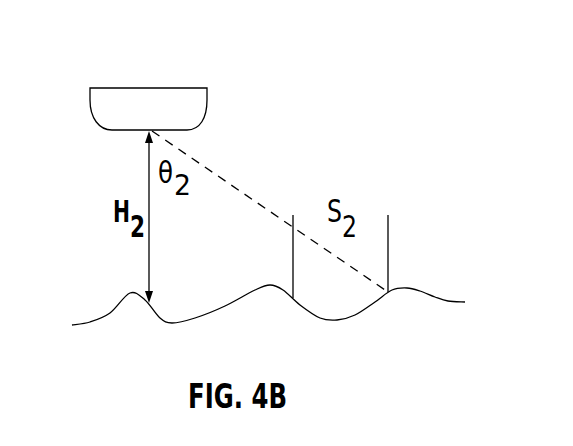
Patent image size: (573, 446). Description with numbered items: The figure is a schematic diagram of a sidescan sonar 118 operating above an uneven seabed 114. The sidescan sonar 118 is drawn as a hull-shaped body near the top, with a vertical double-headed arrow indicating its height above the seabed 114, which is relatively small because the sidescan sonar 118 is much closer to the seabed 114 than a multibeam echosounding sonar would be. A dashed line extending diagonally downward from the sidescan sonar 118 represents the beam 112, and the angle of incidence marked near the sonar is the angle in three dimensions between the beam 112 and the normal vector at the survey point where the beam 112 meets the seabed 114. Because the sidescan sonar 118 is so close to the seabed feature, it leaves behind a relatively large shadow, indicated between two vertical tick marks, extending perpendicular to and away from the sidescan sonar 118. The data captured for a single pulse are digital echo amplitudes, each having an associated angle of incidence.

The sidescan sonar 118 is at (118, 87).
The beam 112 is at (235, 192).
The seabed 114 is at (443, 300).